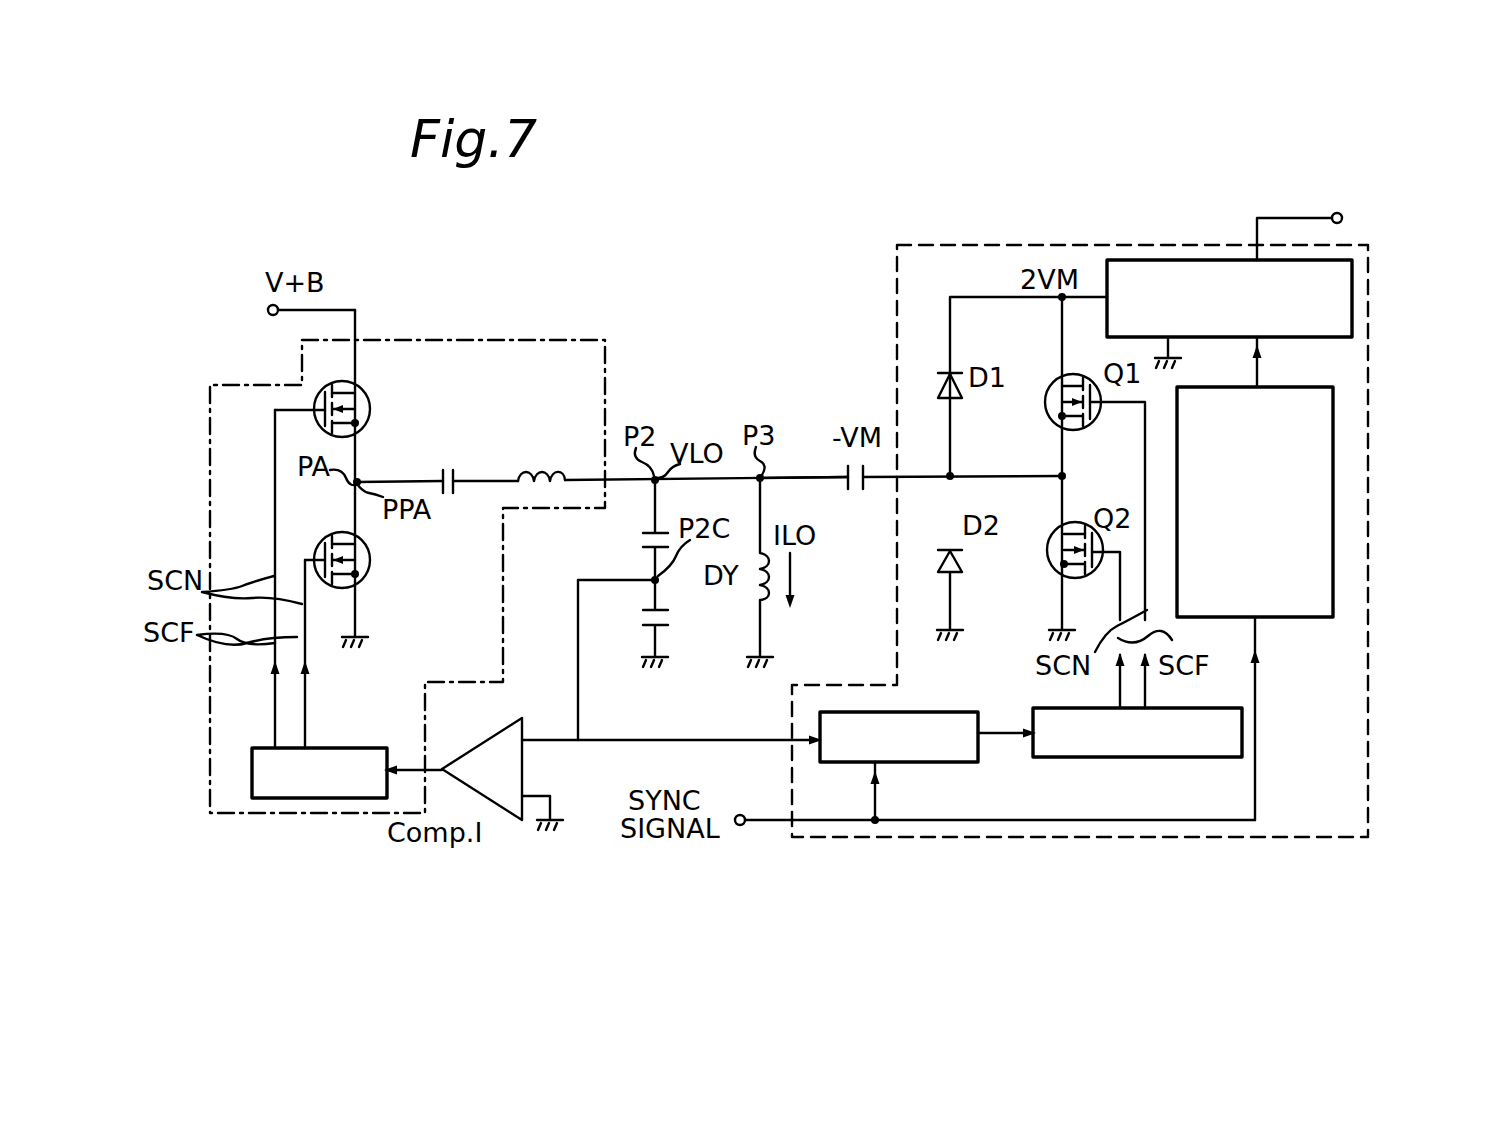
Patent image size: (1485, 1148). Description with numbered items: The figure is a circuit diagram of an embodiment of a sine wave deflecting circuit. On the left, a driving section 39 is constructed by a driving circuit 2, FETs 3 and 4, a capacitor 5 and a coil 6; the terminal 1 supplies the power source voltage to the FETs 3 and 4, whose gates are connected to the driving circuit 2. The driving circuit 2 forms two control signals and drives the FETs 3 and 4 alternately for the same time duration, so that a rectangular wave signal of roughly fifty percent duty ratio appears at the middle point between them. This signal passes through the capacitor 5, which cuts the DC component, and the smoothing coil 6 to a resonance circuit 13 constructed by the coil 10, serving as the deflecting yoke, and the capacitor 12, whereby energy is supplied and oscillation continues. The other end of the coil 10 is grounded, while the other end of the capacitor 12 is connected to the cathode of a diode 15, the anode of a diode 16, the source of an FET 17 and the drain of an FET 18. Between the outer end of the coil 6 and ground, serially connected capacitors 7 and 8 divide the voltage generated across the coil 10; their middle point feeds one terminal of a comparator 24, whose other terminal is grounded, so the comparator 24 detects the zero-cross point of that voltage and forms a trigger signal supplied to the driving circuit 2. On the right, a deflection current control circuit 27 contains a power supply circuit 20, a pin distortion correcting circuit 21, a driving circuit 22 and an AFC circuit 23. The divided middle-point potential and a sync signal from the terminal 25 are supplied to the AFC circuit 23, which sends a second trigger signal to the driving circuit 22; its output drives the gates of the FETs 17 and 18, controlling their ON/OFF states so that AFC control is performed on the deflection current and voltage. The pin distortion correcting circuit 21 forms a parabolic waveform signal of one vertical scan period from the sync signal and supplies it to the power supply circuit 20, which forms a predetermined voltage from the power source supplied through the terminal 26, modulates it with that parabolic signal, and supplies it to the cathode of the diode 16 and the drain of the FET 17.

The terminal 1 is at (273, 316).
The driving circuit 2 is at (333, 748).
The FET 3 is at (364, 396).
The FET 4 is at (368, 564).
The capacitor 5 is at (446, 469).
The coil 6 is at (528, 469).
The capacitor 7 is at (642, 536).
The capacitor 8 is at (646, 618).
The coil 10 is at (754, 590).
The capacitor 12 is at (858, 490).
The resonance circuit 13 is at (786, 458).
The diode 15 is at (961, 558).
The diode 16 is at (954, 396).
The FET 17 is at (1098, 387).
The FET 18 is at (1084, 522).
The power supply circuit 20 is at (1294, 338).
The pin distortion correcting circuit 21 is at (1288, 617).
The driving circuit 22 is at (1140, 757).
The AFC circuit 23 is at (929, 762).
The comparator 24 is at (486, 743).
The terminal 25 is at (736, 812).
The terminal 26 is at (1342, 216).
The deflection current control circuit 27 is at (1004, 245).
The driving section 39 is at (497, 336).